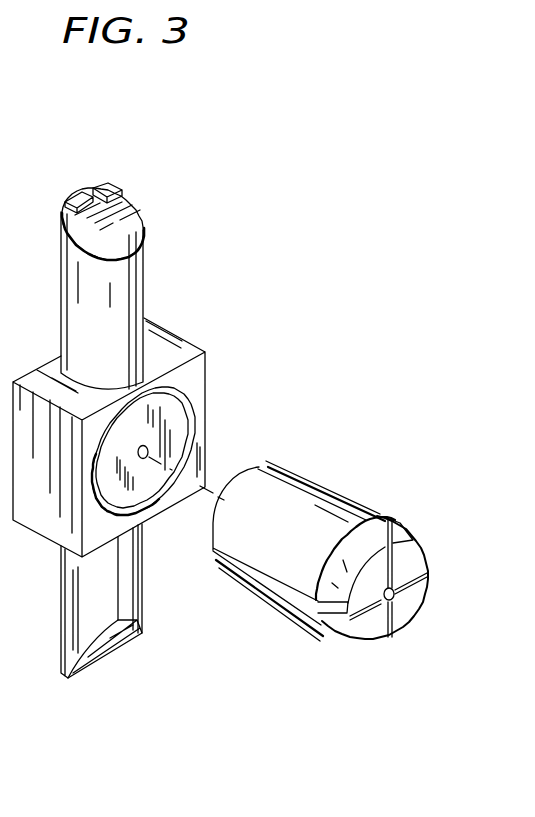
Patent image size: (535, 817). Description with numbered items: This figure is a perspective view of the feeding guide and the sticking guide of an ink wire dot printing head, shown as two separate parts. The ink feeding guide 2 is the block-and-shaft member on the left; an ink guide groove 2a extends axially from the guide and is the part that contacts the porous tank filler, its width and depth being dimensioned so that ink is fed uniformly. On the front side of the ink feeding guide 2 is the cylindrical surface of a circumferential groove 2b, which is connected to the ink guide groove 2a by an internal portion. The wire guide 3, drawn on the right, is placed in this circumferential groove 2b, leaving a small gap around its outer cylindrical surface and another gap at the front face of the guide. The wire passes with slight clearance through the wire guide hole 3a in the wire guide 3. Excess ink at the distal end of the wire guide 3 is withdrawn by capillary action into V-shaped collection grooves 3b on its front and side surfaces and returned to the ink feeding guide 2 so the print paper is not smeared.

The ink feeding guide 2 is at (181, 340).
The ink guide groove 2a is at (102, 188).
The circumferential groove 2b is at (193, 410).
The wire guide 3 is at (412, 535).
The wire guide hole 3a is at (400, 597).
The collection grooves 3b is at (342, 637).